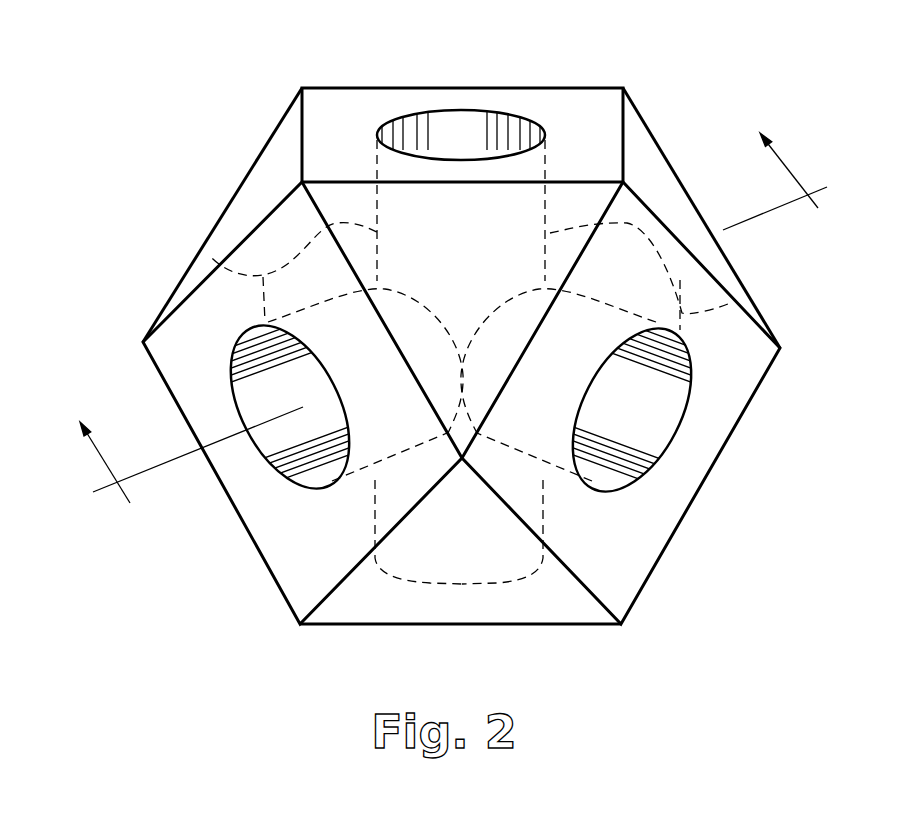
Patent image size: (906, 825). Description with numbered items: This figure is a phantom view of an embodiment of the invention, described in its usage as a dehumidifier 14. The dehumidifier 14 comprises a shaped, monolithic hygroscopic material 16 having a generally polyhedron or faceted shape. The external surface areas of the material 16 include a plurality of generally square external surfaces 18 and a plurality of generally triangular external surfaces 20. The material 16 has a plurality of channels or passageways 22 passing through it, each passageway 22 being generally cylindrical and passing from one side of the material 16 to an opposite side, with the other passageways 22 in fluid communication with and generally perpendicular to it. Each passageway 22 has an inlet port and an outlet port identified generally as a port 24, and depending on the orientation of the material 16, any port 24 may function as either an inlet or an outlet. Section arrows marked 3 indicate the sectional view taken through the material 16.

The dehumidifier 14 is at (473, 382).
The monolithic hygroscopic material 16 is at (622, 625).
The square external surfaces 18 is at (566, 131).
The triangular external surfaces 20 is at (265, 183).
The passageways 22 is at (445, 146).
The port 24 is at (460, 107).
The section line 3- 3 is at (445, 306).